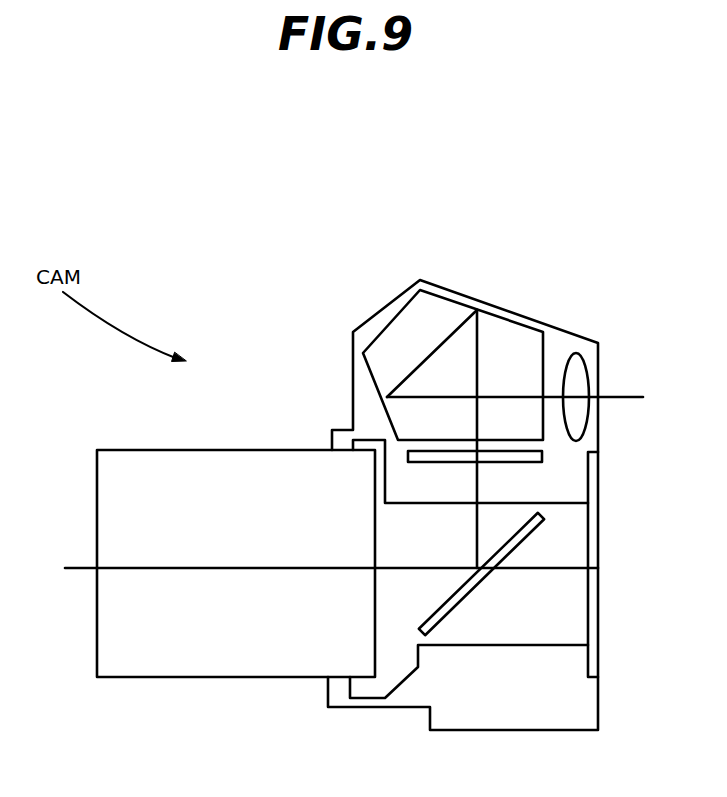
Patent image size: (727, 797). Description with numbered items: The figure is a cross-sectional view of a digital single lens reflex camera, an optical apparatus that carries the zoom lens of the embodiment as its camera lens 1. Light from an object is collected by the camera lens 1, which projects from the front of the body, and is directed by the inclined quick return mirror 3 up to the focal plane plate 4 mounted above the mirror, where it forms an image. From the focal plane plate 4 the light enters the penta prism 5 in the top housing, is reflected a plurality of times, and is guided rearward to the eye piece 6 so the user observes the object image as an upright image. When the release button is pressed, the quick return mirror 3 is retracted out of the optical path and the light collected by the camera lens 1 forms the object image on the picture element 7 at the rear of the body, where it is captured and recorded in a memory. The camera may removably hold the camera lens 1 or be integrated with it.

The camera lens 1 is at (168, 462).
The quick return mirror 3 is at (467, 600).
The focal plane plate 4 is at (540, 463).
The penta prism 5 is at (487, 328).
The eye piece 6 is at (573, 377).
The picture element 7 is at (592, 548).